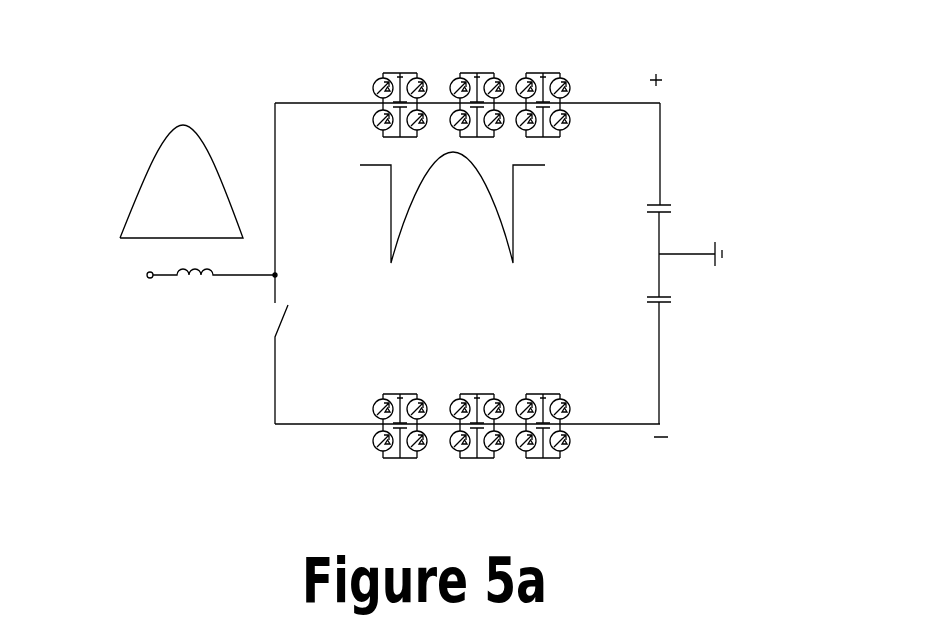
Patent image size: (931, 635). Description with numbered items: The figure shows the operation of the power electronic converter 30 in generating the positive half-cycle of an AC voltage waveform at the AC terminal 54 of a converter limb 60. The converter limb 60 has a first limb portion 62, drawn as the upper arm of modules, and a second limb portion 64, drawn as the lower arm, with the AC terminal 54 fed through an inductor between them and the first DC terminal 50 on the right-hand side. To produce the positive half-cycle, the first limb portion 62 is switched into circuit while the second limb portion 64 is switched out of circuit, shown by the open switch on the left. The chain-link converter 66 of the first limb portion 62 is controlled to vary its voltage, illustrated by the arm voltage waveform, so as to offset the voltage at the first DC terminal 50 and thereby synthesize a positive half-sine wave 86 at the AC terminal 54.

The power electronic converter 30 is at (166, 403).
The first DC terminal 50 is at (668, 103).
The AC terminal 54 is at (259, 290).
The converter limb 60 is at (586, 86).
The first limb portion 62 is at (251, 100).
The second limb portion 64 is at (268, 442).
The chain-link converter 66 is at (368, 390).
The positive half-sine wave 86 is at (148, 152).